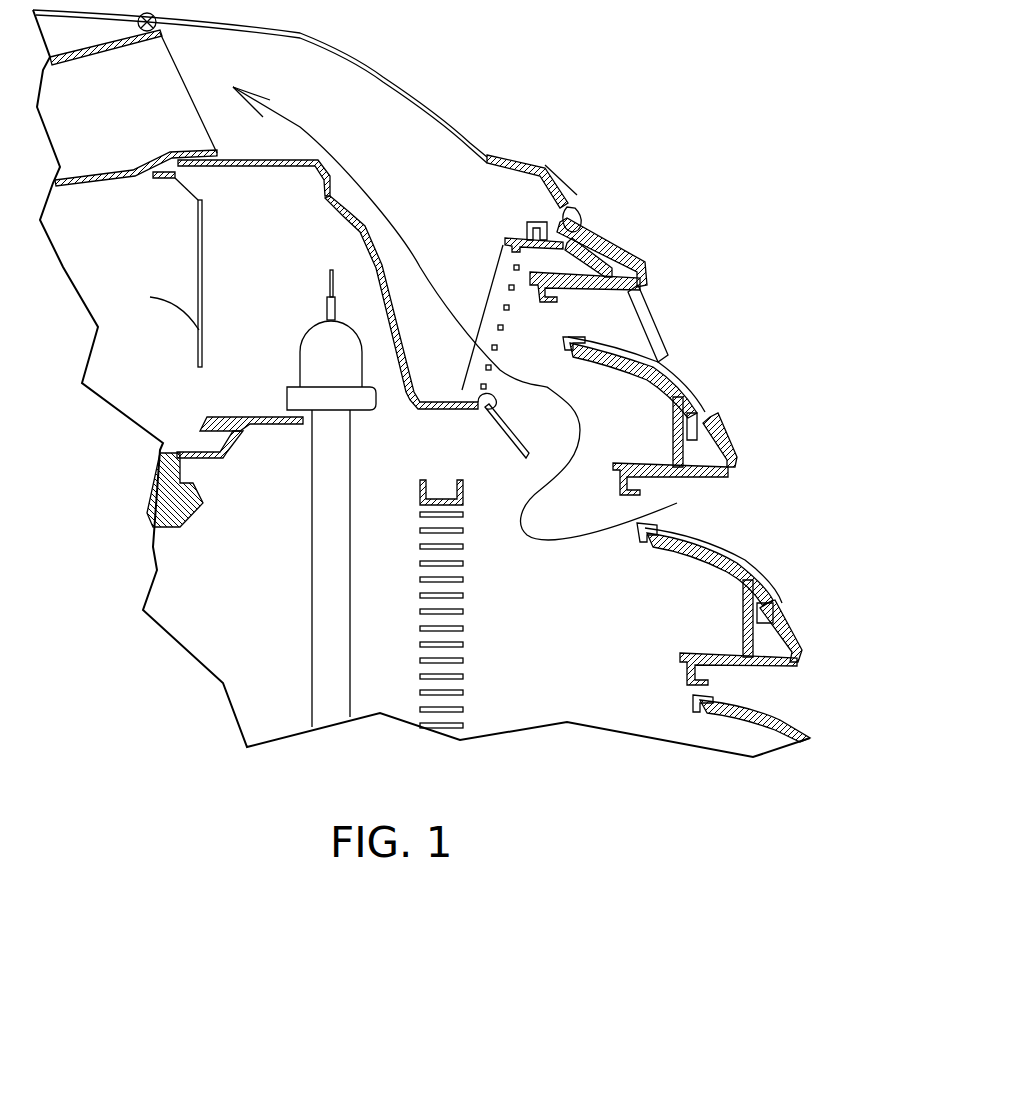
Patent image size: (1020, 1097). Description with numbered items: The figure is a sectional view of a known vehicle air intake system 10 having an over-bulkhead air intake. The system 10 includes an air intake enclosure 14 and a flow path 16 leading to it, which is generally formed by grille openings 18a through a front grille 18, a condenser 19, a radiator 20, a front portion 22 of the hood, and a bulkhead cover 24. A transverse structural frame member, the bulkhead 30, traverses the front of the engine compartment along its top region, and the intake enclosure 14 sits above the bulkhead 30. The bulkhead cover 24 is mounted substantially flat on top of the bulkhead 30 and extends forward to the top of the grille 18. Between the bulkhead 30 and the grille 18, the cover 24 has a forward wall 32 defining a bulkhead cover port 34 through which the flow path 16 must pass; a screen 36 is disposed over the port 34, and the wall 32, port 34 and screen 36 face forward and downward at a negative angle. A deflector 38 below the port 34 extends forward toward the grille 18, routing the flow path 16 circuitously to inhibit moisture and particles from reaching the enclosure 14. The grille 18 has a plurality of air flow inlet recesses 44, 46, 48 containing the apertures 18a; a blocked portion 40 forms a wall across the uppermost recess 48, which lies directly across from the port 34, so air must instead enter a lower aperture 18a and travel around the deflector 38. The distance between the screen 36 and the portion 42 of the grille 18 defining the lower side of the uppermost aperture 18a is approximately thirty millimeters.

The vehicle air intake system 10 is at (643, 788).
The air intake enclosure 14 is at (97, 112).
The flow path 16 is at (547, 543).
The grille 18 is at (753, 410).
The grille openings 18a is at (565, 338).
The condenser 19 is at (447, 673).
The radiator 20 is at (313, 553).
The front portion of hood 22 is at (417, 95).
The bulkhead cover 24 is at (402, 398).
The bulkhead 30 is at (207, 257).
The forward wall 32 is at (489, 295).
The bulkhead cover port 34 is at (487, 415).
The screen 36 is at (503, 328).
The deflector 38 is at (493, 465).
The blocked portion 40 is at (640, 310).
The portion of the grille 42 is at (577, 365).
The air flow inlet recess 44 is at (783, 693).
The air flow inlet recess 46 is at (717, 522).
The uppermost air flow inlet recess 48 is at (663, 325).